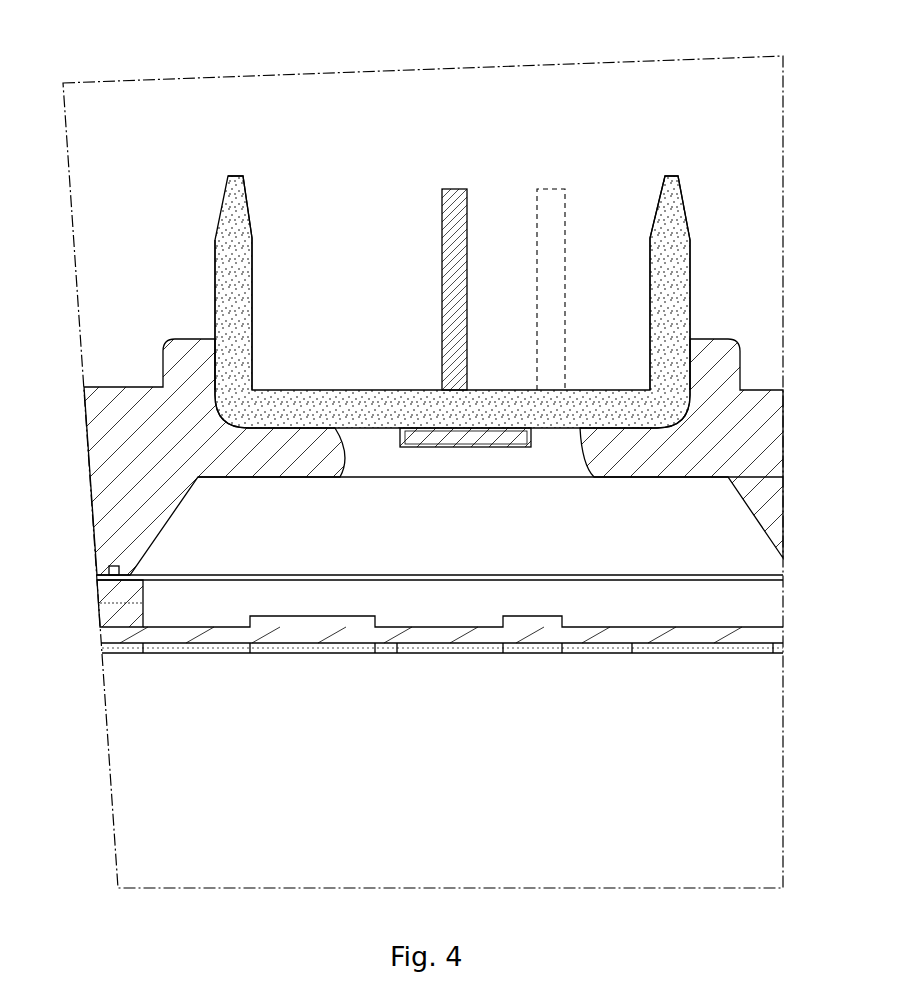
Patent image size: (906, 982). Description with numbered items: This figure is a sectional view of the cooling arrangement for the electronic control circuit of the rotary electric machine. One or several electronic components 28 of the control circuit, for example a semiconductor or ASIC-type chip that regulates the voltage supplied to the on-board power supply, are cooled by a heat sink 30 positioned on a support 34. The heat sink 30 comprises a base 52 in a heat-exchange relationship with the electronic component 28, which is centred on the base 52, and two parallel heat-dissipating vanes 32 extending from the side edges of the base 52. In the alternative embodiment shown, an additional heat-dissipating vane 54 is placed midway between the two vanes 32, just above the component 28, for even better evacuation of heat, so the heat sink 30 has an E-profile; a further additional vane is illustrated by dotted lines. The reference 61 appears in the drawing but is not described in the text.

The heat sink 30 is at (478, 108).
The support 34 is at (115, 418).
The coating layer 61 is at (151, 383).
The base 52 is at (479, 302).
The heat-dissipating vanes 32 is at (256, 290).
The additional heat-dissipating vane 54 is at (442, 258).
The electronic component 28 is at (463, 450).